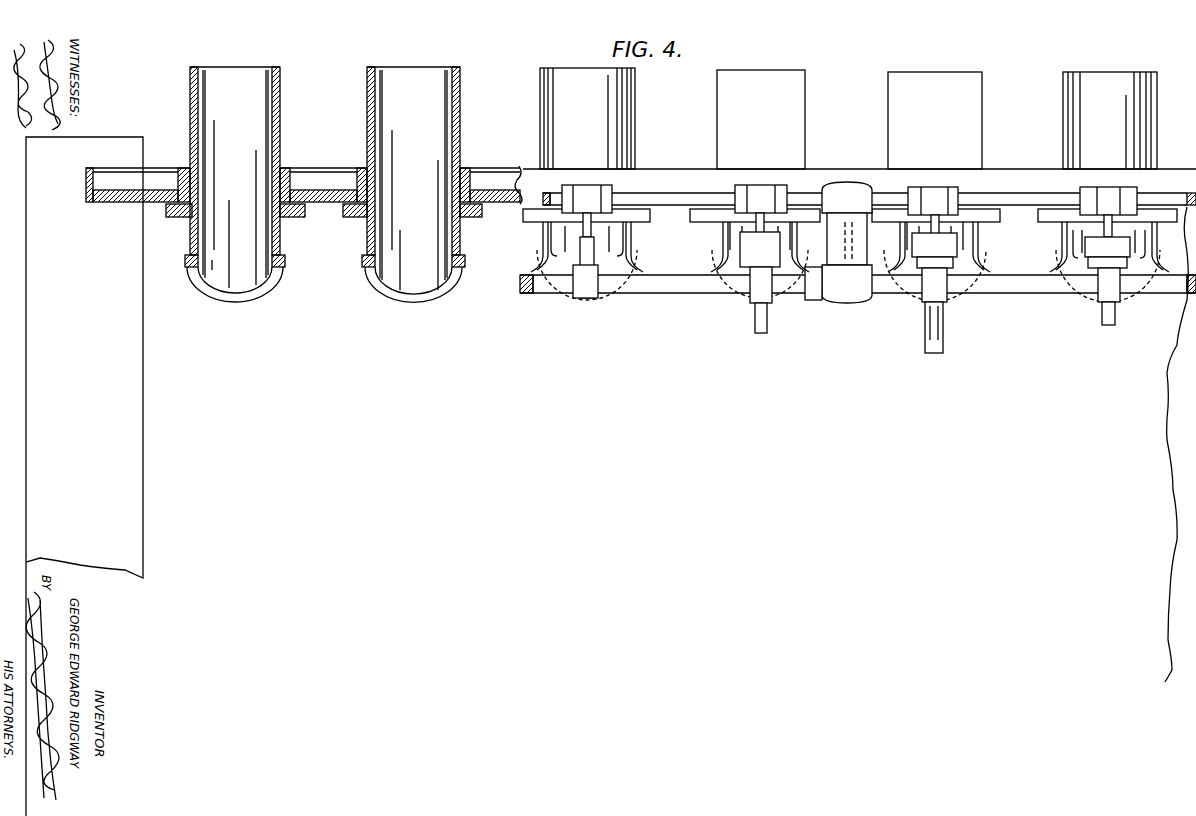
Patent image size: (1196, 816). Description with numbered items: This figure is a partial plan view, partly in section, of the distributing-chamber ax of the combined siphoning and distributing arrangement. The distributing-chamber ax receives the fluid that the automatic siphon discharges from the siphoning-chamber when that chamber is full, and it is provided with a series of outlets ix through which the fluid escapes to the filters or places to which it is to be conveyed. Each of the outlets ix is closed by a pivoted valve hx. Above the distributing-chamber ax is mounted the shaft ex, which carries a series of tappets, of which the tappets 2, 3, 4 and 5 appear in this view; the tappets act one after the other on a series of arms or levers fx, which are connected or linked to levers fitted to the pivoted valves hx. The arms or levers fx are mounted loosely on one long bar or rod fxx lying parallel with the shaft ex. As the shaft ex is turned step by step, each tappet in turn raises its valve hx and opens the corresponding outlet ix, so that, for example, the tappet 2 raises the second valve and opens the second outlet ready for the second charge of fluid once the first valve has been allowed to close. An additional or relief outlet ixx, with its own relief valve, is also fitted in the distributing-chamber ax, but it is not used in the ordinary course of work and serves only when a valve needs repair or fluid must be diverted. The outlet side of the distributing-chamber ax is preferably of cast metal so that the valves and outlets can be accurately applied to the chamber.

The distributing-chamber ax is at (1167, 538).
The relief outlet ixx is at (235, 184).
The outlets ix is at (759, 184).
The shaft ex is at (1037, 290).
The bar or rod fxx is at (650, 205).
The arms or levers fx is at (1174, 232).
The pivoted valves hx is at (608, 296).
The tappet 2 is at (1106, 323).
The tappet 3 is at (944, 346).
The tappet 4 is at (767, 324).
The tappet 5 is at (588, 259).